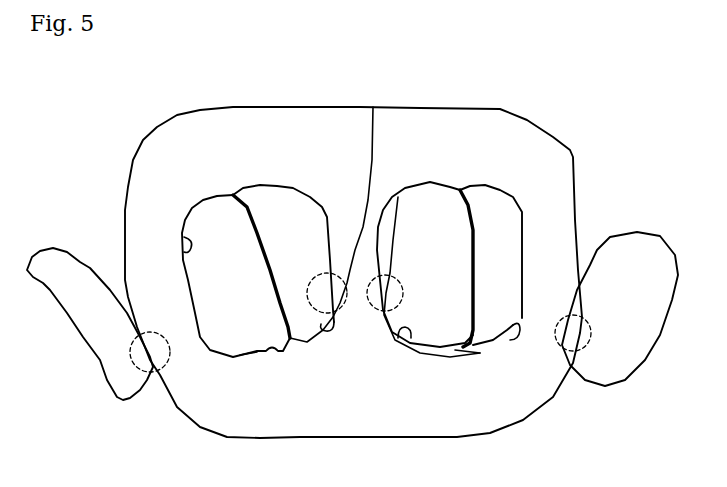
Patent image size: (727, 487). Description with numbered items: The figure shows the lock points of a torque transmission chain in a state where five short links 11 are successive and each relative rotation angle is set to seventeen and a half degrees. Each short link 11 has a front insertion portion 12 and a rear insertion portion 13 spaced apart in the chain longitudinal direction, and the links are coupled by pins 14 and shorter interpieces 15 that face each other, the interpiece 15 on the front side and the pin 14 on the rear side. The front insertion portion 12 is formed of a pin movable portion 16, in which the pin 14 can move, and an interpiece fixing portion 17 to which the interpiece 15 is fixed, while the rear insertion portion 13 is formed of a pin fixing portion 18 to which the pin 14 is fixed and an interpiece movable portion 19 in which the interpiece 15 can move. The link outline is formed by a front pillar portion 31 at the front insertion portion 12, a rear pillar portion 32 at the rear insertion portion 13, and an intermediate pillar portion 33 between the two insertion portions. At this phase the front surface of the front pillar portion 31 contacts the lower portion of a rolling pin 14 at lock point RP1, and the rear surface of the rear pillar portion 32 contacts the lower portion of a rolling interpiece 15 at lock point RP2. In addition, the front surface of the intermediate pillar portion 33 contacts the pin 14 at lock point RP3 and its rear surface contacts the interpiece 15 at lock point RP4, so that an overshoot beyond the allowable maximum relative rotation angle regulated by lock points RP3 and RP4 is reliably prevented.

The short link 11 is at (625, 161).
The front insertion portion 12 is at (455, 352).
The rear insertion portion 13 is at (277, 355).
The pin 14 is at (218, 217).
The interpiece 15 is at (278, 205).
The pin movable portion 16 is at (411, 340).
The interpiece fixing portion 17 is at (510, 343).
The pin fixing portion 18 is at (184, 237).
The interpiece movable portion 19 is at (321, 332).
The front pillar portion 31 is at (557, 237).
The rear pillar portion 32 is at (150, 277).
The intermediate pillar portion 33 is at (373, 107).
The lock point RP1 is at (580, 352).
The lock point RP2 is at (142, 372).
The lock point RP3 is at (376, 313).
The lock point RP4 is at (353, 313).